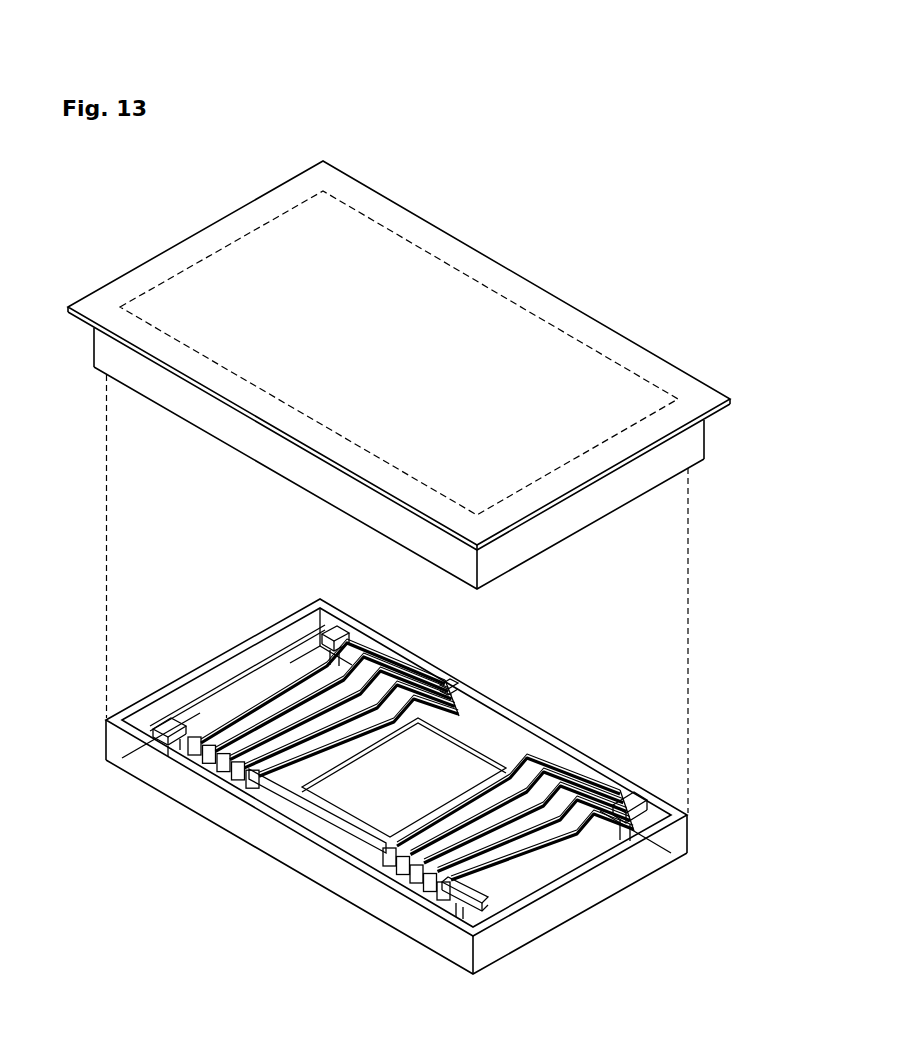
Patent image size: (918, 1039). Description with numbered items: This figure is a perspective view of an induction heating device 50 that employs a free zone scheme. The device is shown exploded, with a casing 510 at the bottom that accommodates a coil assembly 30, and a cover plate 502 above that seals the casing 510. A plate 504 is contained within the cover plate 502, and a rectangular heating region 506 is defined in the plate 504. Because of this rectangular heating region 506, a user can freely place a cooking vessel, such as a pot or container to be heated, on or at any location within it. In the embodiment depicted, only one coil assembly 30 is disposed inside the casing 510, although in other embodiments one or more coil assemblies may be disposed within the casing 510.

The induction heating device 50 is at (581, 255).
The plate 504 is at (698, 403).
The rectangular heating region 506 is at (452, 268).
The cover plate 502 is at (707, 440).
The casing 510 is at (689, 833).
The coil assembly 30 is at (362, 793).